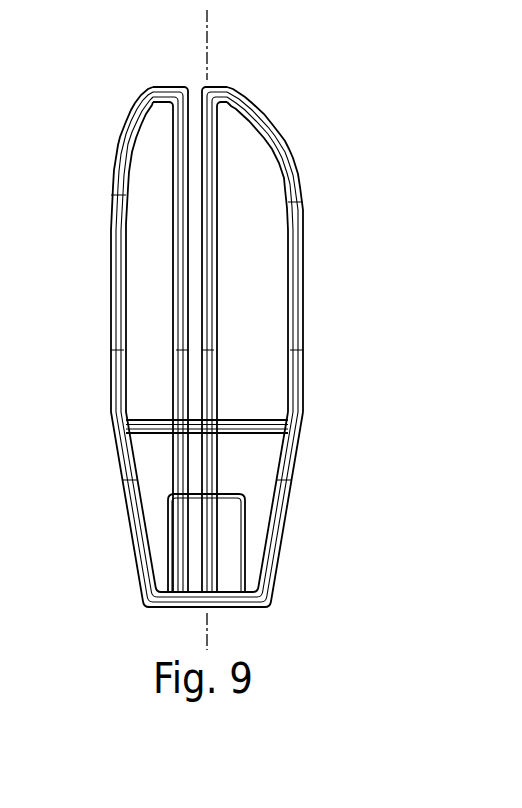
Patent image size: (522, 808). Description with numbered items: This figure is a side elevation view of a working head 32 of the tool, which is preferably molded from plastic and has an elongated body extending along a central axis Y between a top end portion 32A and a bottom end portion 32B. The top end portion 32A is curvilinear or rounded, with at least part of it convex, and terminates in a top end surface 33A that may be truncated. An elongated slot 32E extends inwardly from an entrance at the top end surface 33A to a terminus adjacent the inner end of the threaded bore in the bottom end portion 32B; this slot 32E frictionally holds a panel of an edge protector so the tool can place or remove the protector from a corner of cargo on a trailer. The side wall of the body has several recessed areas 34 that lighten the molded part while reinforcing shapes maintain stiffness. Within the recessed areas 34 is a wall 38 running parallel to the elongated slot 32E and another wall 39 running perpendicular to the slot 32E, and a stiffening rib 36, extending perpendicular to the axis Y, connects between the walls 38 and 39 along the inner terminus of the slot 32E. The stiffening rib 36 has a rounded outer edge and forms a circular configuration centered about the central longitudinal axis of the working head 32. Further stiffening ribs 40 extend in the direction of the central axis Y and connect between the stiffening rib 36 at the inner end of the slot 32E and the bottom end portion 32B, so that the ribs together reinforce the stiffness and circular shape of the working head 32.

The working head 32 is at (371, 174).
The top end portion 32A is at (240, 90).
The bottom end portion 32B is at (157, 608).
The elongated slot 32E is at (195, 98).
The top end surface 33A is at (180, 90).
The recessed areas 34 is at (147, 280).
The stiffening rib 36 is at (263, 417).
The wall 38 is at (215, 222).
The wall 39 is at (267, 263).
The stiffening ribs 40 is at (173, 463).
The central axis Y is at (207, 45).